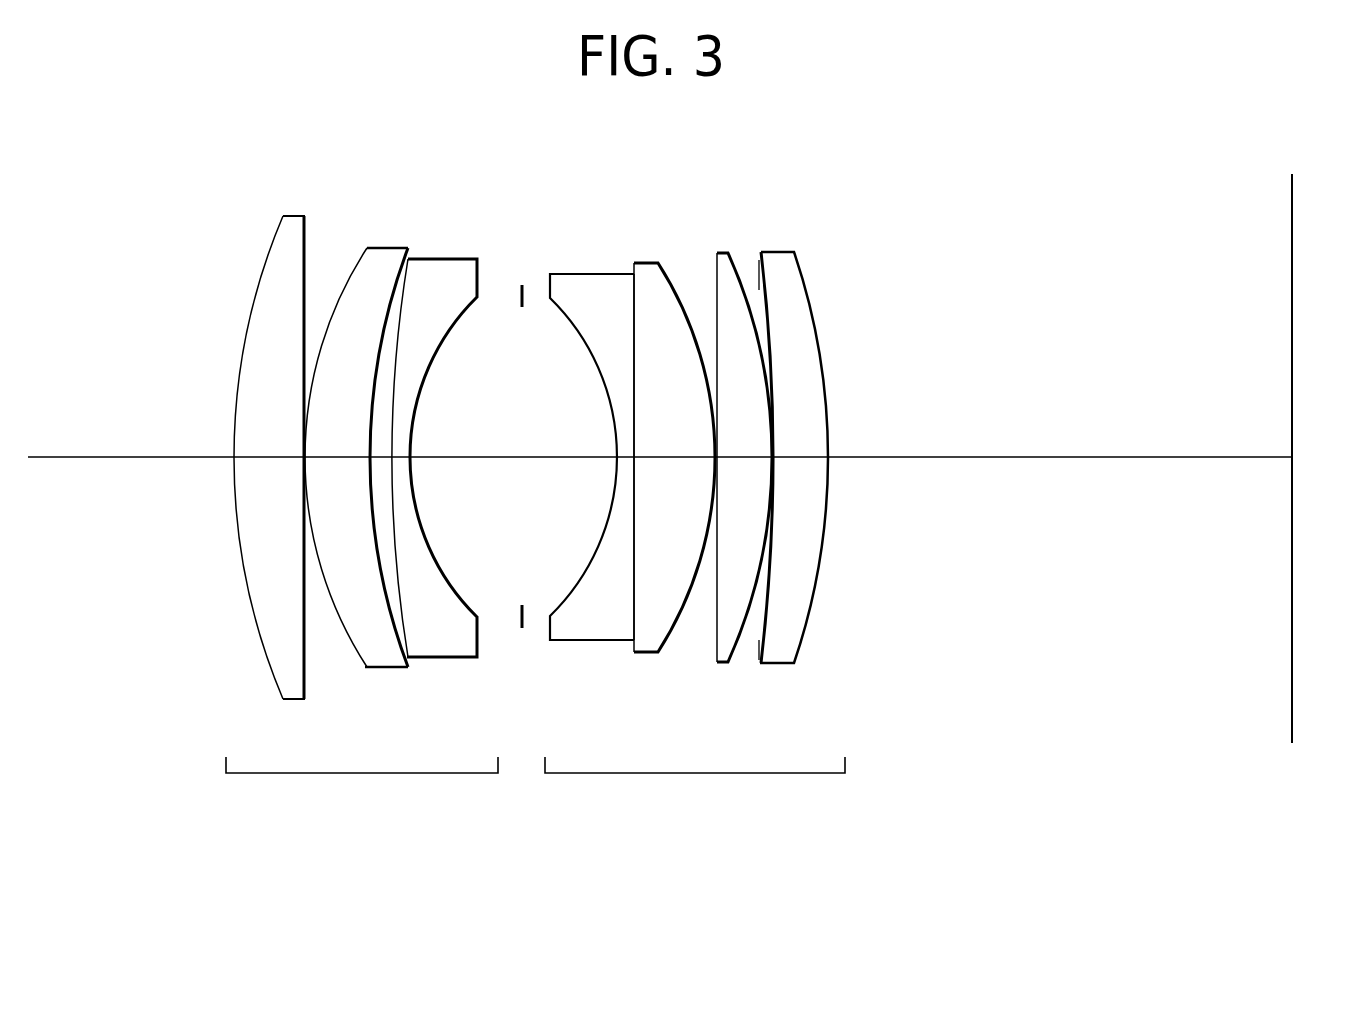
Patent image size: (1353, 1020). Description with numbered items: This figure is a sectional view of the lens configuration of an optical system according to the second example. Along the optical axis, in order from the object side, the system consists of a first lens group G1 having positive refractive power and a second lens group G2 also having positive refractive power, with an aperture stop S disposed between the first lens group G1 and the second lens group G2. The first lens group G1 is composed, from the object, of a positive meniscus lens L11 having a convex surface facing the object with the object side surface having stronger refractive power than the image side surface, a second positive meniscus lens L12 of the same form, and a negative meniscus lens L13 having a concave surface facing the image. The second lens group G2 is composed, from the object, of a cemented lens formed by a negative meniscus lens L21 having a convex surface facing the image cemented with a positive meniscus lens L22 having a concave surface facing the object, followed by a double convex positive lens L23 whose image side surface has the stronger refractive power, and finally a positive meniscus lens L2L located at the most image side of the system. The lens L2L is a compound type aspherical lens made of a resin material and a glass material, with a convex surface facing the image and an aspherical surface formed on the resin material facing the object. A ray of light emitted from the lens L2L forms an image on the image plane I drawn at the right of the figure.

The positive meniscus lens L11 is at (293, 215).
The positive meniscus lens L12 is at (388, 248).
The negative meniscus lens L13 is at (450, 258).
The negative meniscus lens L21 is at (582, 274).
The positive meniscus lens L22 is at (645, 263).
The double convex positive lens L23 is at (723, 250).
The positive meniscus lens L2L is at (802, 272).
The aperture stop S is at (523, 615).
The image plane I is at (1292, 693).
The first lens group G1 is at (362, 784).
The second lens group G2 is at (695, 784).